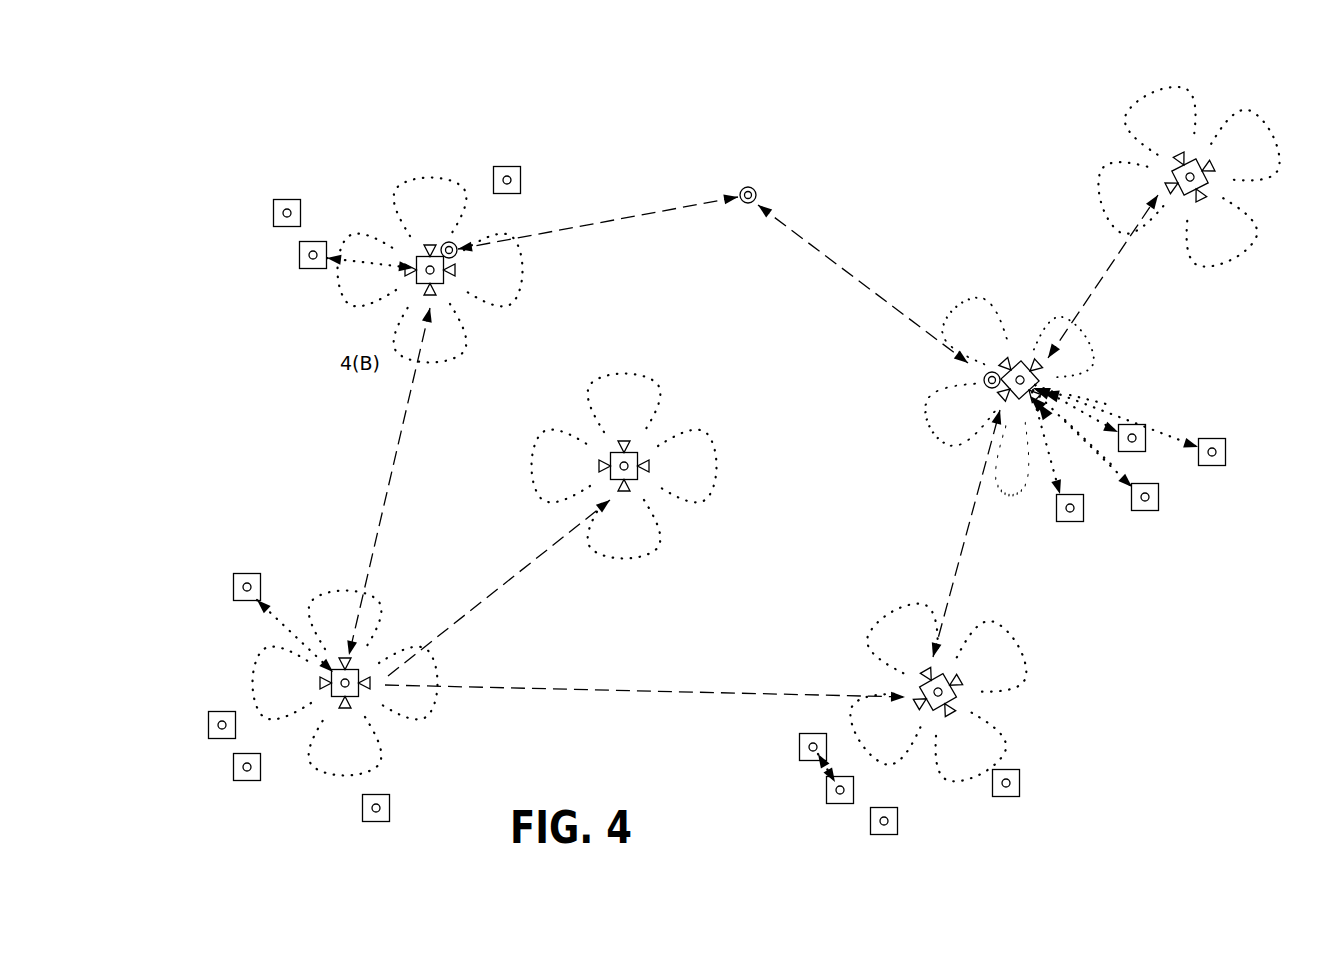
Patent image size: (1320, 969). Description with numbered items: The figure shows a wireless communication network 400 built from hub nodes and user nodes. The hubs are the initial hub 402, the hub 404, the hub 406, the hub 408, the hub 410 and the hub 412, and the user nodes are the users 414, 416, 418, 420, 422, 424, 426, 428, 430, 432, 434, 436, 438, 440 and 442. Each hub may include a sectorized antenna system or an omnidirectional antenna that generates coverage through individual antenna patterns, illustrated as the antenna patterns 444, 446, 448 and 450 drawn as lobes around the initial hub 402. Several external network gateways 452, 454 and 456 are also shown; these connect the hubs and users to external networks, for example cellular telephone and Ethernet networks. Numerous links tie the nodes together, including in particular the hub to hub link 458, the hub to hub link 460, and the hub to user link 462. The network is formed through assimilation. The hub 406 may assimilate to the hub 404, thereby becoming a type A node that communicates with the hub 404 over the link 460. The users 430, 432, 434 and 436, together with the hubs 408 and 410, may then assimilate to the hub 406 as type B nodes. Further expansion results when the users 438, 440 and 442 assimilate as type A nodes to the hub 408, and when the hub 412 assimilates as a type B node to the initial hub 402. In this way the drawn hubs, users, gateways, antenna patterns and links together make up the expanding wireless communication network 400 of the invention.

The wireless communication network 400 is at (978, 127).
The hub node 402 is at (1065, 283).
The hub node 404 is at (917, 587).
The hub node 406 is at (410, 612).
The hub node 408 is at (367, 209).
The hub node 410 is at (683, 393).
The hub node 412 is at (1220, 97).
The user node 414 is at (1145, 448).
The user node 416 is at (1226, 452).
The user node 418 is at (1073, 522).
The user node 420 is at (1148, 511).
The user node 422 is at (993, 785).
The user node 424 is at (870, 821).
The user node 426 is at (826, 790).
The user node 428 is at (800, 747).
The user node 430 is at (362, 808).
The user node 432 is at (233, 767).
The user node 434 is at (208, 725).
The user node 436 is at (247, 574).
The user node 438 is at (521, 180).
The user node 440 is at (305, 268).
The user node 442 is at (285, 227).
The antenna pattern 444 is at (1204, 348).
The antenna pattern 446 is at (967, 301).
The antenna pattern 448 is at (916, 446).
The antenna pattern 450 is at (1019, 472).
The external network gateway 452 is at (458, 250).
The external network gateway 454 is at (746, 186).
The external network gateway 456 is at (982, 380).
The hub to hub link 458 is at (962, 571).
The hub to hub link 460 is at (683, 662).
The hub to user link 462 is at (1125, 439).